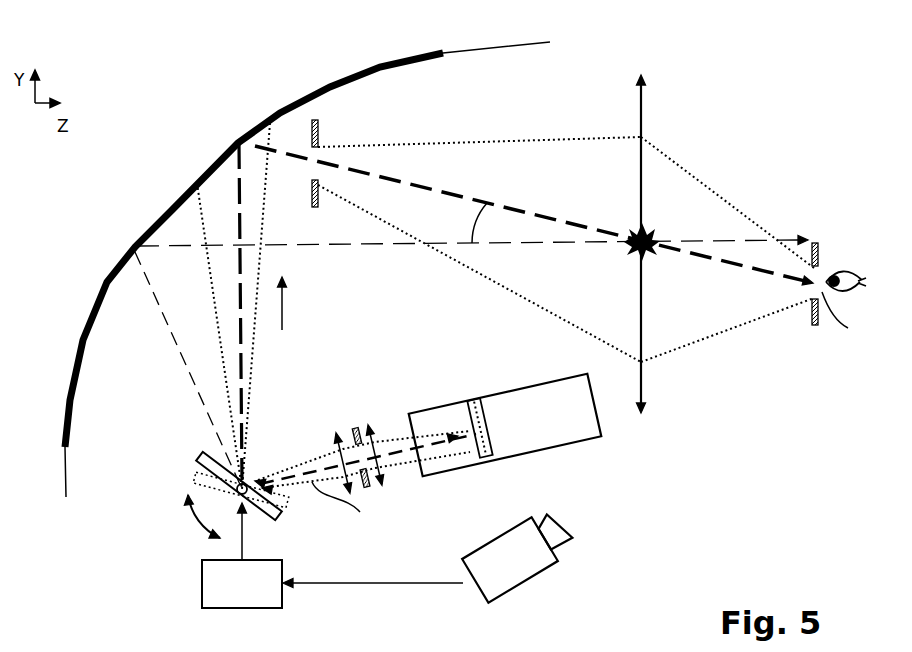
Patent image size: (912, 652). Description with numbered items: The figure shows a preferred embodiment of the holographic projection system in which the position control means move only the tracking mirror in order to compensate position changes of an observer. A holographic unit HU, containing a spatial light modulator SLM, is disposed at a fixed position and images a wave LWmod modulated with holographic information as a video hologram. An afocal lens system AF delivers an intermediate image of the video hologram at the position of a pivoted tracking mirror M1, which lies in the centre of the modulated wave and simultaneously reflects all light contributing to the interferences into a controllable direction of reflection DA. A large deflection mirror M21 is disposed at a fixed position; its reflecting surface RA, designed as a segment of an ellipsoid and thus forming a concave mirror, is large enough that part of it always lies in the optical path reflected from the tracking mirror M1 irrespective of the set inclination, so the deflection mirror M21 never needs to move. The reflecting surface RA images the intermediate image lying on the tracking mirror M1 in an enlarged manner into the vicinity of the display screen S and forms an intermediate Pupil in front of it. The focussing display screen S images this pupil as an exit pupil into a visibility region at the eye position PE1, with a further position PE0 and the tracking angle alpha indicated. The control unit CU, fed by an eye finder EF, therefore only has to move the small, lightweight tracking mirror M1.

The reflecting surface RA is at (307, 278).
The deflection mirror M21 is at (487, 79).
The intermediate pupil Pupil is at (347, 161).
The display screen S is at (628, 244).
The deflection angle alpha is at (494, 223).
The eye position PE0 is at (795, 235).
The eye position PE1 is at (834, 330).
The direction of reflection DA is at (300, 323).
The tracking mirror M1 is at (216, 495).
The afocal lens system AF is at (359, 443).
The modulated wave LWmod is at (369, 513).
The holographic unit HU is at (505, 425).
The spatial light modulator SLM is at (501, 427).
The control unit CU is at (242, 555).
The eye finder EF is at (431, 554).